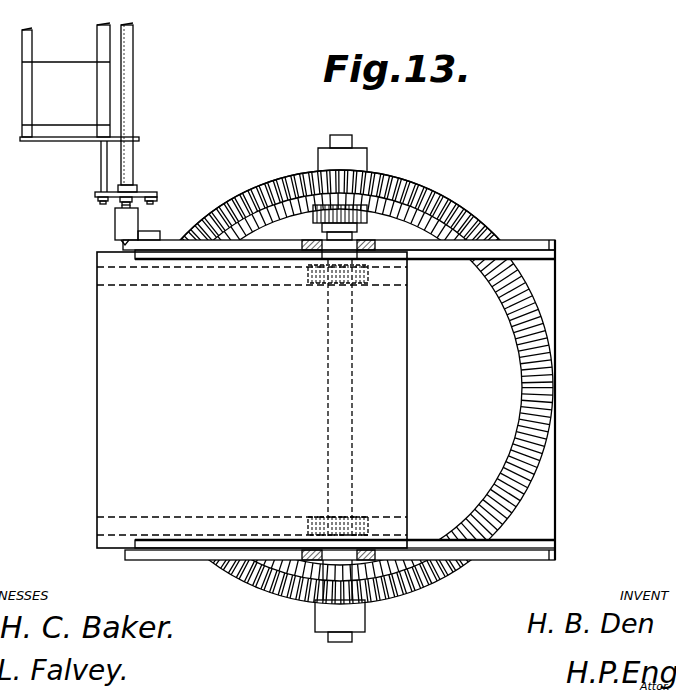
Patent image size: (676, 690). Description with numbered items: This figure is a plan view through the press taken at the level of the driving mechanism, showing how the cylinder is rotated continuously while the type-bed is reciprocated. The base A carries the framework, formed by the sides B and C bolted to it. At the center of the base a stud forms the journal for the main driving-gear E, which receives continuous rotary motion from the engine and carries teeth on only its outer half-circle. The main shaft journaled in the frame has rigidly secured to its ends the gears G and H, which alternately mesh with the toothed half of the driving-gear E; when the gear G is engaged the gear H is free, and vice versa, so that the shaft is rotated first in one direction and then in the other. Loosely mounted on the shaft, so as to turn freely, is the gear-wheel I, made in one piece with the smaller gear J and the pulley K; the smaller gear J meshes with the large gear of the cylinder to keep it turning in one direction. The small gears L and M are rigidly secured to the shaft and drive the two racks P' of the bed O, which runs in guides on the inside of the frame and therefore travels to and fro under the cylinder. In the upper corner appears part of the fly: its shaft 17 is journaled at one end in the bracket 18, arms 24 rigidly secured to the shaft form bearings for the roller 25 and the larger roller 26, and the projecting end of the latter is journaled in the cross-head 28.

The shaft 17 is at (137, 107).
The bracket 18 is at (128, 222).
The arm 24 is at (79, 149).
The roller 25 is at (63, 81).
The roller 26 is at (91, 107).
The cross-head 28 is at (137, 190).
The base A is at (437, 399).
The side B is at (537, 562).
The side C is at (538, 228).
The main driving-gear E is at (540, 350).
The gear G is at (406, 180).
The gear H is at (390, 601).
The gear-wheel I is at (285, 192).
The smaller gear J is at (313, 211).
The pulley K is at (357, 231).
The small gear L is at (339, 399).
The small gear M is at (368, 512).
The bed O is at (252, 400).
The rack P' is at (252, 401).